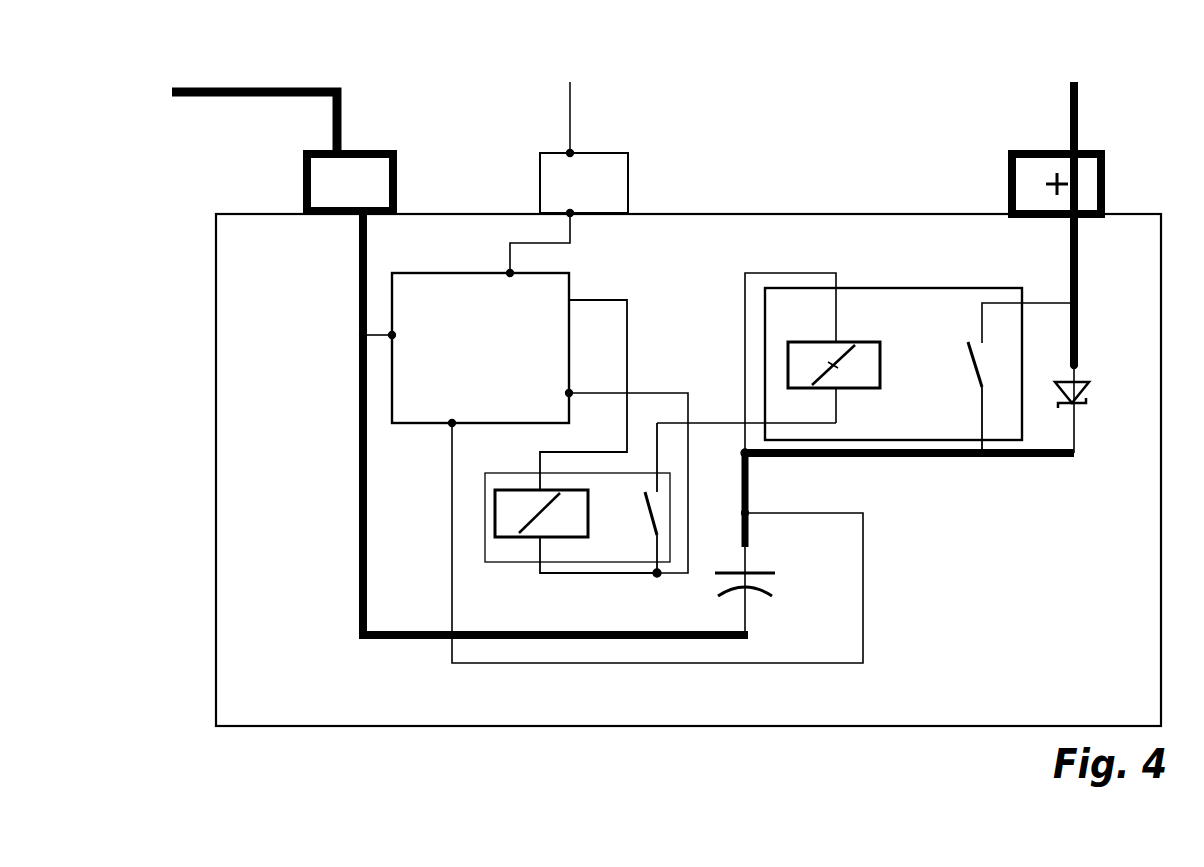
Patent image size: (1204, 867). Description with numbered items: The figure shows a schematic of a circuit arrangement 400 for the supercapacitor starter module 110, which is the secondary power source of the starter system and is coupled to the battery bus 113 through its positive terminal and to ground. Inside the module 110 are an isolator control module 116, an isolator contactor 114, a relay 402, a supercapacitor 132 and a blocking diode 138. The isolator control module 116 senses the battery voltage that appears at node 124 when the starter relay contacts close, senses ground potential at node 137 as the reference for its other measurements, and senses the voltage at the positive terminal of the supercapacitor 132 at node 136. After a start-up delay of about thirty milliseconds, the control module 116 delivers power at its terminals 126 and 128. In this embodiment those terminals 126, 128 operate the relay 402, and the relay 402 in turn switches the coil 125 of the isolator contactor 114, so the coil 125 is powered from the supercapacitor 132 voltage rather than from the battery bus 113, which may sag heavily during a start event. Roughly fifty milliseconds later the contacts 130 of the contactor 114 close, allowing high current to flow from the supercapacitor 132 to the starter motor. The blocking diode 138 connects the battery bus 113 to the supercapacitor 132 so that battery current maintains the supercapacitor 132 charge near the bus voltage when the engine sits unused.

The circuit arrangement 400 is at (446, 52).
The battery bus 113 is at (1078, 110).
The supercapacitor starter module 110 is at (303, 672).
The isolator control module 116 is at (531, 330).
The node 124 is at (506, 272).
The node 137 is at (396, 334).
The terminal 126 is at (572, 300).
The terminal 128 is at (566, 393).
The node 136 is at (449, 426).
The relay 402 is at (640, 557).
The isolator contactor 114 is at (919, 427).
The coil 125 is at (868, 342).
The contacts 130 is at (977, 368).
The blocking diode 138 is at (1088, 390).
The supercapacitor 132 is at (790, 580).